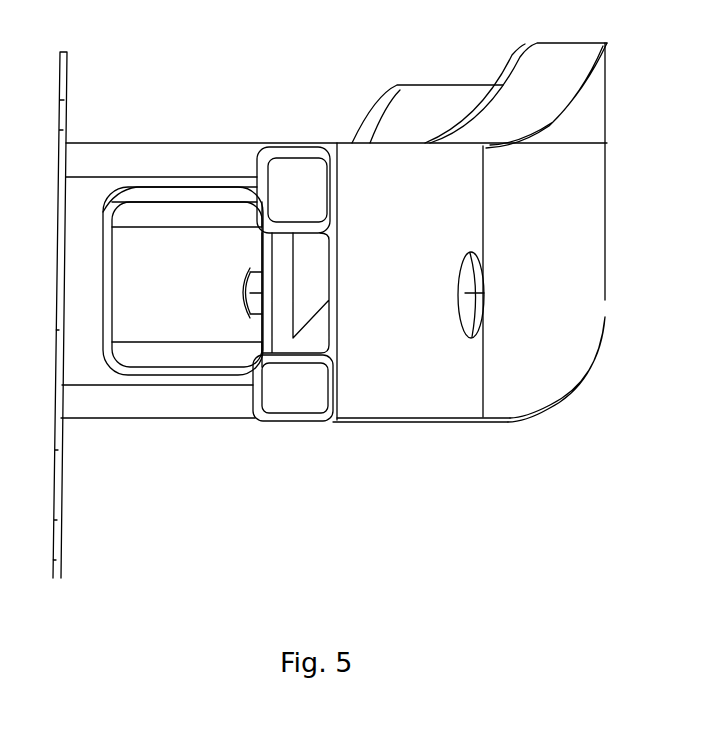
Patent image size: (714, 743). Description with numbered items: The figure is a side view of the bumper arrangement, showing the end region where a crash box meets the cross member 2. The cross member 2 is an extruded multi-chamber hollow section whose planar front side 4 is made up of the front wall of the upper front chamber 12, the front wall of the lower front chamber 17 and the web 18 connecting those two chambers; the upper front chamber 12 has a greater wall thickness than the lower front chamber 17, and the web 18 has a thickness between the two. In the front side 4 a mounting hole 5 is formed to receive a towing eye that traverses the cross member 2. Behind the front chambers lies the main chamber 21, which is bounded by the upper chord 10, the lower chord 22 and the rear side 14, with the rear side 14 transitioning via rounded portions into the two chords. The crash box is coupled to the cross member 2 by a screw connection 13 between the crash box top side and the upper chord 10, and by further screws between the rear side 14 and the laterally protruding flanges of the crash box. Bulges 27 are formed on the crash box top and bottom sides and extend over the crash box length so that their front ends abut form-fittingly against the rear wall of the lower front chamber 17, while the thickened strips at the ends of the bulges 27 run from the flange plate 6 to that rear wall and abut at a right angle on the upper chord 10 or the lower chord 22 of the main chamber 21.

The cross member 2 is at (552, 345).
The front side 4 is at (430, 322).
The mounting hole 5 is at (467, 293).
The flange plate 6 is at (58, 500).
The upper chord 10 is at (221, 185).
The upper front chamber 12 is at (293, 190).
The screw connection 13 is at (250, 282).
The rear side 14 is at (107, 288).
The lower front chamber 17 is at (293, 388).
The web 18 is at (332, 294).
The main chamber 21 is at (194, 303).
The lower chord 22 is at (373, 424).
The bulge 27 is at (130, 141).